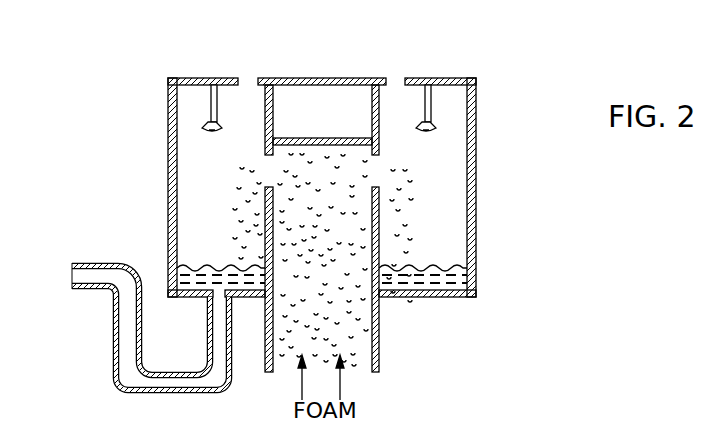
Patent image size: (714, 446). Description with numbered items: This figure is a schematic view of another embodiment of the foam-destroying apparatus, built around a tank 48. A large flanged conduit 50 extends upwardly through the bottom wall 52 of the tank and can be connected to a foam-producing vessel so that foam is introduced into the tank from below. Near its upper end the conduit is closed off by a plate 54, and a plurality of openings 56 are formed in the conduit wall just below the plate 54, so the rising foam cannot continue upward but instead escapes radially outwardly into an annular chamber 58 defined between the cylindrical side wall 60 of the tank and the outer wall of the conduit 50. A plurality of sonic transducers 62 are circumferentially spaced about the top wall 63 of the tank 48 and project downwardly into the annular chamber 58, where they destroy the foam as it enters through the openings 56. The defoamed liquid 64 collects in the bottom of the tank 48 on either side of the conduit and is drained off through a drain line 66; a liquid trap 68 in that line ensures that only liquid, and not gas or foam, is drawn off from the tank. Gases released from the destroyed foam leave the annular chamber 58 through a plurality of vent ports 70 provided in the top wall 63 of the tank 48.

The tank 48 is at (502, 235).
The flanged conduit 50 is at (380, 346).
The bottom wall 52 is at (425, 298).
The plate 54 is at (283, 136).
The openings 56 is at (266, 160).
The annular chamber 58 is at (197, 188).
The cylindrical side wall 60 is at (476, 152).
The sonic transducers 62 is at (209, 101).
The top wall 63 is at (278, 78).
The defoamed liquid 64 is at (455, 267).
The drain line 66 is at (86, 289).
The liquid trap 68 is at (122, 388).
The vent ports 70 is at (238, 82).